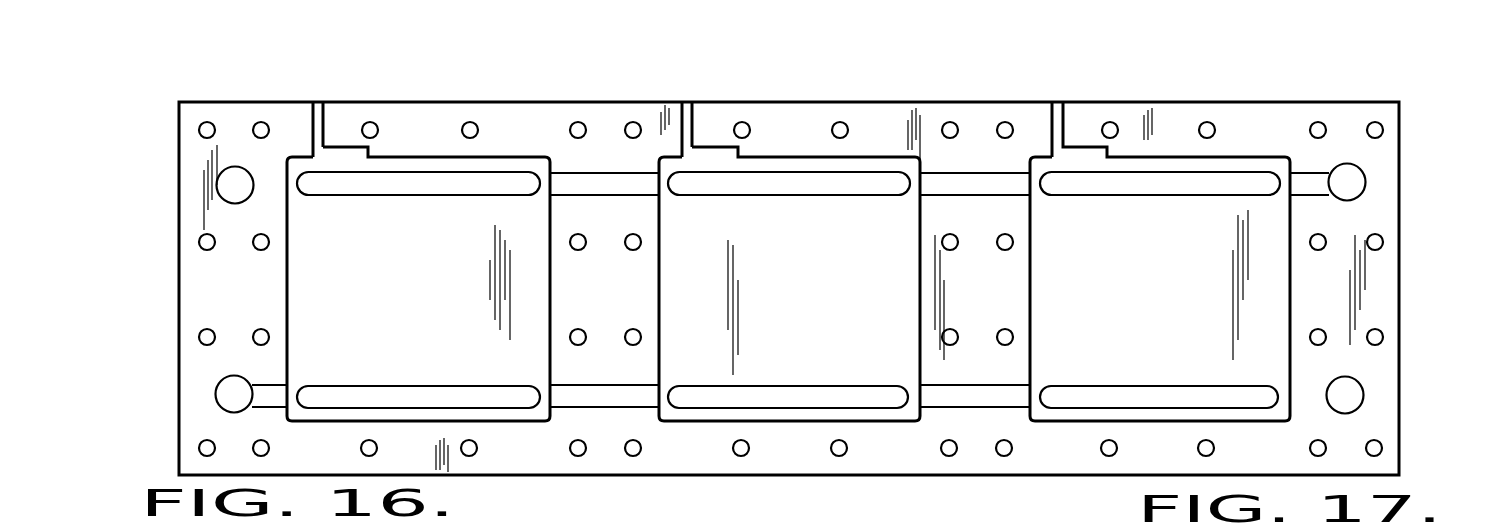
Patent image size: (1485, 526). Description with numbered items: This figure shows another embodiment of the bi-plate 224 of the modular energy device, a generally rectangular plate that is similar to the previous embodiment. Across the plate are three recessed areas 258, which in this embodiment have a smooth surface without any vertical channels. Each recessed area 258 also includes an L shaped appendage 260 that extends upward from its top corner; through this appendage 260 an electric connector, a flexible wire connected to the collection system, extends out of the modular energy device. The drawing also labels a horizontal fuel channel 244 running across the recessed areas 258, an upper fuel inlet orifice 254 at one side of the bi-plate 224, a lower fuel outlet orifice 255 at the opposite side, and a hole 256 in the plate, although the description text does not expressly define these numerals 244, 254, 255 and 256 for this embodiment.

The bi-plate 224 is at (1388, 102).
The rod 244 is at (963, 185).
The aperture 254 is at (1352, 180).
The aperture 255 is at (226, 395).
The hole 256 is at (951, 121).
The recessed area 258 is at (403, 222).
The L shaped appendage 260 is at (324, 140).